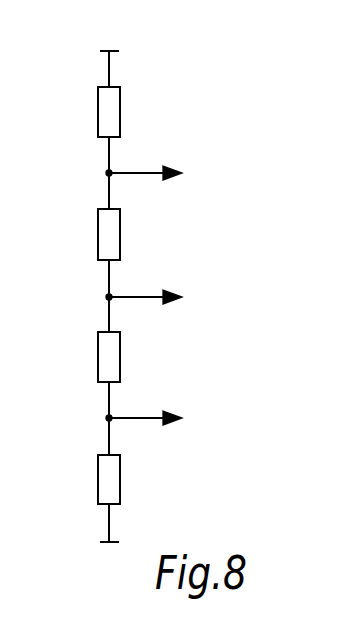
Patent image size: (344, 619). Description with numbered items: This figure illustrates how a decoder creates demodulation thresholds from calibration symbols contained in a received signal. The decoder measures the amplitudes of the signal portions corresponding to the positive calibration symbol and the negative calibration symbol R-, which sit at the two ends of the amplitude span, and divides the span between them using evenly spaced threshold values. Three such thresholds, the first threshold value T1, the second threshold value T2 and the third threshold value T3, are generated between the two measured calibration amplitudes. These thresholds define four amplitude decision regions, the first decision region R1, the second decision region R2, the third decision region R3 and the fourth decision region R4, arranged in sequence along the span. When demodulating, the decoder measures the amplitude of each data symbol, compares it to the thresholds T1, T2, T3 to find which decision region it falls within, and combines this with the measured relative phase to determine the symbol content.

The first amplitude decision region R1 is at (87, 112).
The second amplitude decision region R2 is at (87, 235).
The third amplitude decision region R3 is at (87, 358).
The fourth amplitude decision region R4 is at (87, 479).
The first threshold value T1 is at (159, 178).
The second threshold value T2 is at (159, 302).
The third threshold value T3 is at (159, 423).
The negative calibration symbol R- is at (109, 560).